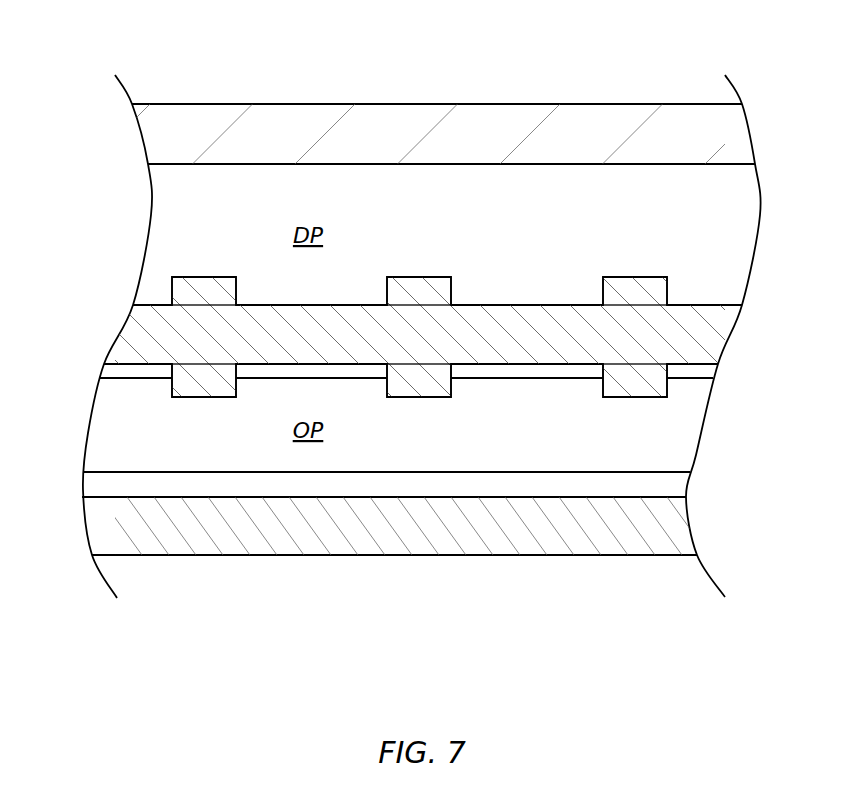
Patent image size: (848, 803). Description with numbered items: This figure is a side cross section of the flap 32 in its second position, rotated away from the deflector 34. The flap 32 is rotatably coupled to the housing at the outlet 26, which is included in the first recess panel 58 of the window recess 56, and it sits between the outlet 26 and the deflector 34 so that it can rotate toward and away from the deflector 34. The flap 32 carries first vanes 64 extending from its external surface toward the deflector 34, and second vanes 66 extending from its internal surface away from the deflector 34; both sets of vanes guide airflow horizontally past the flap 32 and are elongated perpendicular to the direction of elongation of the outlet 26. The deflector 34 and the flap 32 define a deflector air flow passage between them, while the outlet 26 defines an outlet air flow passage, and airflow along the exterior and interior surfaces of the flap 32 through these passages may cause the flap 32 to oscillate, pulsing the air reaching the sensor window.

The outlet 26 is at (124, 436).
The flap 32 is at (527, 367).
The deflector 34 is at (510, 104).
The window recess 56 is at (680, 527).
The first recess panel 58 is at (680, 483).
The first vanes 64 is at (204, 277).
The second vanes 66 is at (204, 397).